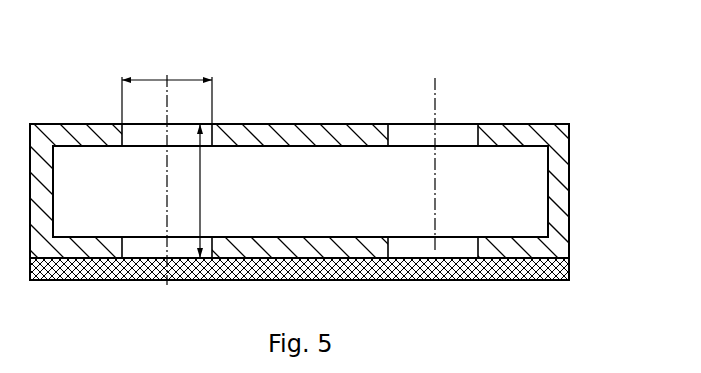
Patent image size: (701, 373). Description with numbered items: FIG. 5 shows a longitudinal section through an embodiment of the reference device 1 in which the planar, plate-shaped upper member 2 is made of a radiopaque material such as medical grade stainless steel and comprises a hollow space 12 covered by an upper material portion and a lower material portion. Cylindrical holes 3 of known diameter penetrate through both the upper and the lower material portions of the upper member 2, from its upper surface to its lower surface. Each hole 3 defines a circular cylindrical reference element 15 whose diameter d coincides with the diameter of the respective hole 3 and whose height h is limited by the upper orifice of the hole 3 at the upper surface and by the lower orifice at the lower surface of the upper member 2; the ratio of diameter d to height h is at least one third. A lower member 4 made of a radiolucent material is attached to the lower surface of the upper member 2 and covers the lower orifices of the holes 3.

The reference device 1 is at (501, 43).
The upper member 2 is at (562, 157).
The hole 3 is at (180, 133).
The lower member 4 is at (540, 278).
The hollow space 12 is at (515, 195).
The reference element 15 is at (135, 124).